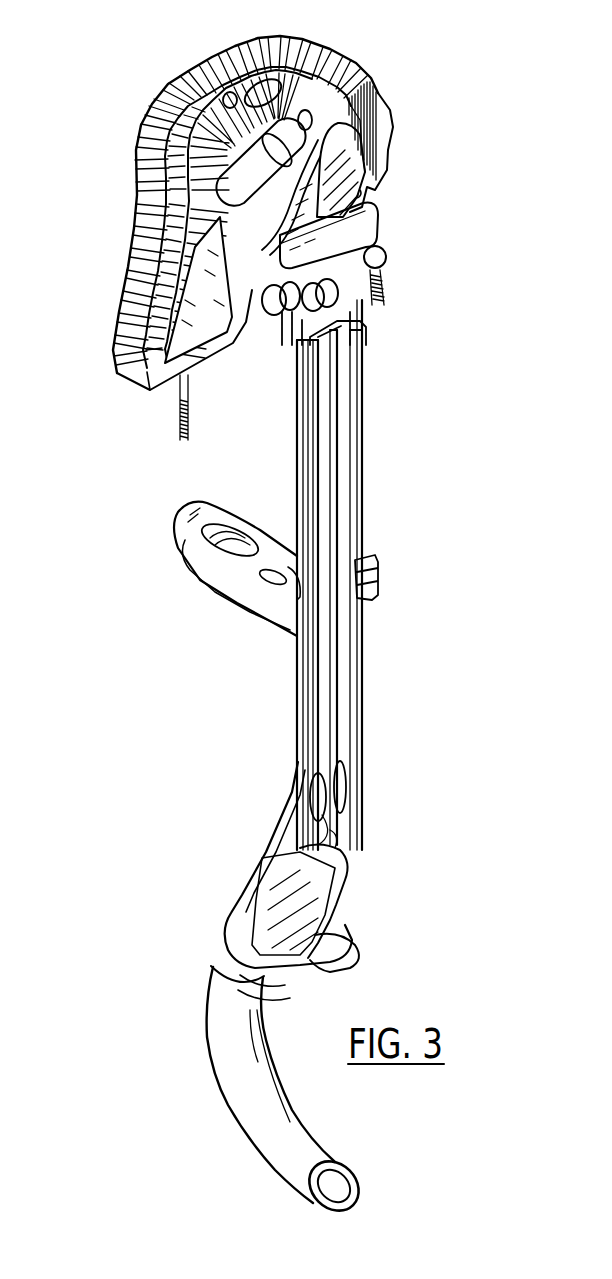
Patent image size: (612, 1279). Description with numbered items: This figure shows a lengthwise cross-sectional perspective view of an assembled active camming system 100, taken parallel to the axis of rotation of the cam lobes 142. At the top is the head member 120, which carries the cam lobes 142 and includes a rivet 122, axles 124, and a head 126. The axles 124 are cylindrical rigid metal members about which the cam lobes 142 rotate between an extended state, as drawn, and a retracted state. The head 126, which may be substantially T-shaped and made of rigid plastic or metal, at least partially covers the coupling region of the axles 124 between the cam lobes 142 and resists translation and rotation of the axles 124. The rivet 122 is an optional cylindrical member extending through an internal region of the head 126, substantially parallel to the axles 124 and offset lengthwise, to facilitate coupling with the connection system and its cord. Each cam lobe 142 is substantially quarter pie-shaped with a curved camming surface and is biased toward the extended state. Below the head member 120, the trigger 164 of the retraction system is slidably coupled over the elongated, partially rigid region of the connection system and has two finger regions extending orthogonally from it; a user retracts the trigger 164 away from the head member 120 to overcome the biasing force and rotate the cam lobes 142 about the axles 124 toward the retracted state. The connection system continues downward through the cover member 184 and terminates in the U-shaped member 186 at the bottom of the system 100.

The active camming system 100 is at (60, 87).
The head member 120 is at (478, 182).
The cam lobes 142 is at (372, 90).
The head 126 is at (352, 212).
The axles 124 is at (375, 256).
The rivet 122 is at (332, 302).
The trigger 164 is at (197, 560).
The cover member 184 is at (245, 912).
The U-shaped member 186 is at (237, 1073).